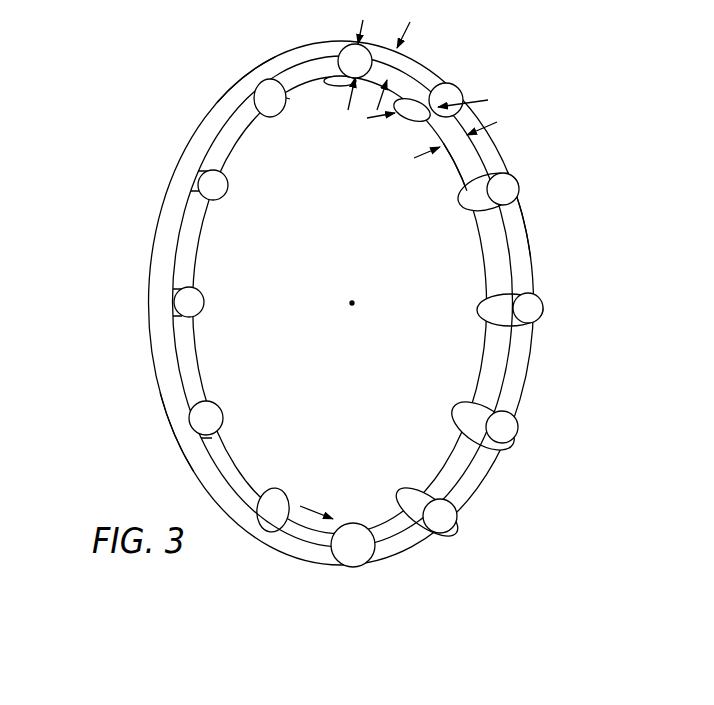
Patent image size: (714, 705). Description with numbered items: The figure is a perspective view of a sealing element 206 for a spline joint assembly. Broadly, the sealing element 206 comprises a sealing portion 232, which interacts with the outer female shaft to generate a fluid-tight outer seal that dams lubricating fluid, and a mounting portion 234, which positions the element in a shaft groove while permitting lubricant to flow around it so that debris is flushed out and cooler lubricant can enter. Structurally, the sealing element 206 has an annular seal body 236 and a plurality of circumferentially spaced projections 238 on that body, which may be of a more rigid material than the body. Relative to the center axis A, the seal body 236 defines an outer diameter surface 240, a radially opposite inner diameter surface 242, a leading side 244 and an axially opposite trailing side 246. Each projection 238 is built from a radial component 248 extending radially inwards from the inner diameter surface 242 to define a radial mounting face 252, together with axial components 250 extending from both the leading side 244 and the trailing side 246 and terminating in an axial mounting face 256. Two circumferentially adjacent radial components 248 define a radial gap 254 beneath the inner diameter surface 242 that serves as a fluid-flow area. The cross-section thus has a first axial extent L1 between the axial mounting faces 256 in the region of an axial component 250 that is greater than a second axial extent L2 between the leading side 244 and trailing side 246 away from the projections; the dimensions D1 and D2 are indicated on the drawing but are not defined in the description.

The sealing element 206 is at (99, 207).
The sealing portion 232 is at (249, 57).
The mounting portion 234 is at (439, 429).
The annular seal body 236 is at (157, 438).
The projections 238 is at (231, 199).
The outer diameter surface 240 is at (208, 128).
The inner diameter surface 242 is at (497, 252).
The leading side 244 is at (520, 240).
The trailing side 246 is at (458, 160).
The radial component 248 is at (470, 199).
The axial component 250 is at (535, 310).
The radial mounting face 252 is at (463, 421).
The radial gap 254 is at (373, 534).
The axial mounting face 256 is at (191, 303).
The ball diameter D1 is at (364, 55).
The pocket width D2 is at (396, 59).
The first axial extent L1 is at (475, 111).
The second axial extent L2 is at (416, 161).
The center axis A is at (341, 294).